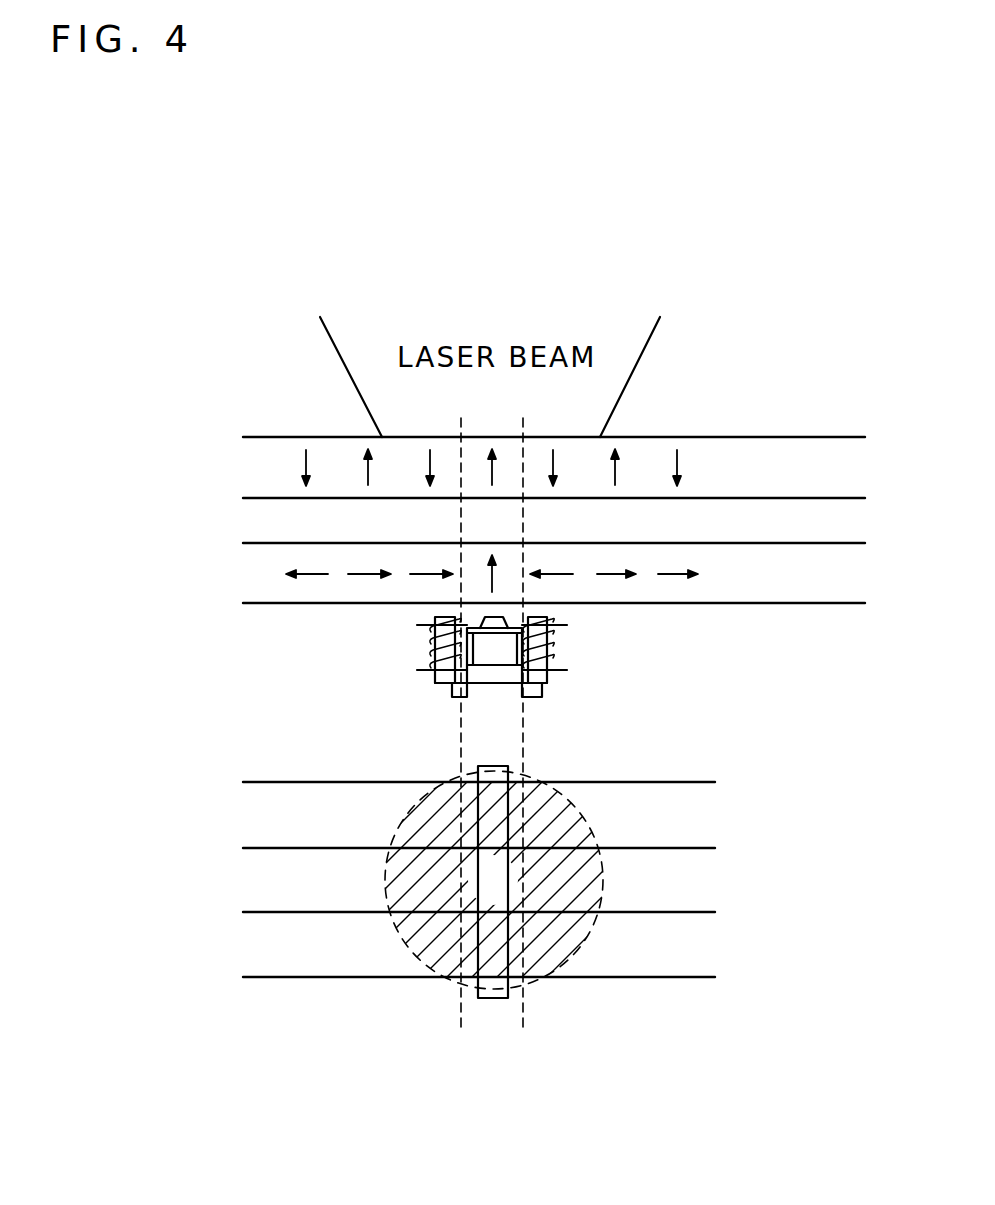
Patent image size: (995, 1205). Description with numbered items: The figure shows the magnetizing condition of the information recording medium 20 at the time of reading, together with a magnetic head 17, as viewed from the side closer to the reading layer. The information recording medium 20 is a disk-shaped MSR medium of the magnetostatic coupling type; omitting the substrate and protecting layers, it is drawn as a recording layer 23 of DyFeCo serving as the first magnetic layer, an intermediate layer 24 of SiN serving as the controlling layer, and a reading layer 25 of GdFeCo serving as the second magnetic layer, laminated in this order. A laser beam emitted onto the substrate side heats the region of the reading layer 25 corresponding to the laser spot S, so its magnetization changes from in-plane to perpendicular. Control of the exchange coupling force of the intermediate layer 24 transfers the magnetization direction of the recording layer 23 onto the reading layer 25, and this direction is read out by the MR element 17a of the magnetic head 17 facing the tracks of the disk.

The information recording medium 20 is at (708, 382).
The recording layer 23 is at (272, 468).
The intermediate layer 24 is at (253, 519).
The reading layer 25 is at (257, 578).
The magnetic head 17 is at (478, 764).
The MR element 17a is at (492, 633).
The laser spot S is at (420, 803).